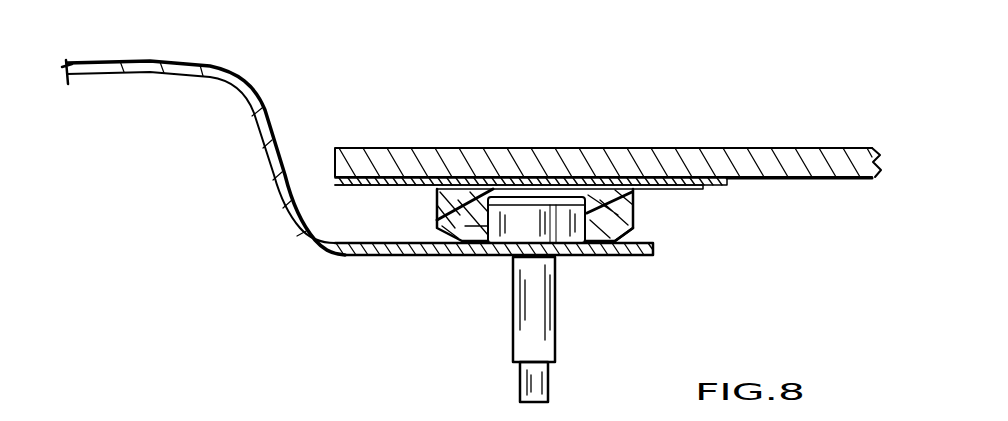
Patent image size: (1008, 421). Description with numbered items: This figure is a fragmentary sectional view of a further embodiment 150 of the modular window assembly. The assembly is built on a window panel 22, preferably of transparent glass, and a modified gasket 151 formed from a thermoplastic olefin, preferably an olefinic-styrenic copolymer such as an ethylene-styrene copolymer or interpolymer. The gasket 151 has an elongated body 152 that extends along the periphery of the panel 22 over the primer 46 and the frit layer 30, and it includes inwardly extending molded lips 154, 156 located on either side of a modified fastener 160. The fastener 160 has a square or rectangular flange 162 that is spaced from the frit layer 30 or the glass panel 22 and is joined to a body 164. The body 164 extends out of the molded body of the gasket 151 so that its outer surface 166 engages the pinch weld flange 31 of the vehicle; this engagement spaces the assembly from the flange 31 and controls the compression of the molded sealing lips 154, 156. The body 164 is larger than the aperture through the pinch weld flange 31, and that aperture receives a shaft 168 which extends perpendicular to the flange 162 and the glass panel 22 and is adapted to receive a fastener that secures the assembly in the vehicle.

The further embodiment of the modular window assembly 150 is at (705, 105).
The panel 22 is at (790, 148).
The pinch weld flange 31 is at (146, 72).
The frit layer 30 is at (715, 188).
The primer 46 is at (683, 190).
The elongated body 152 is at (640, 222).
The molded lip 156 is at (613, 240).
The molded lip 154 is at (437, 253).
The body 164 is at (517, 217).
The flange 162 is at (558, 202).
The fastener 160 is at (512, 340).
The outer surface 166 is at (503, 257).
The shaft 168 is at (557, 347).
The gasket 151 is at (433, 208).